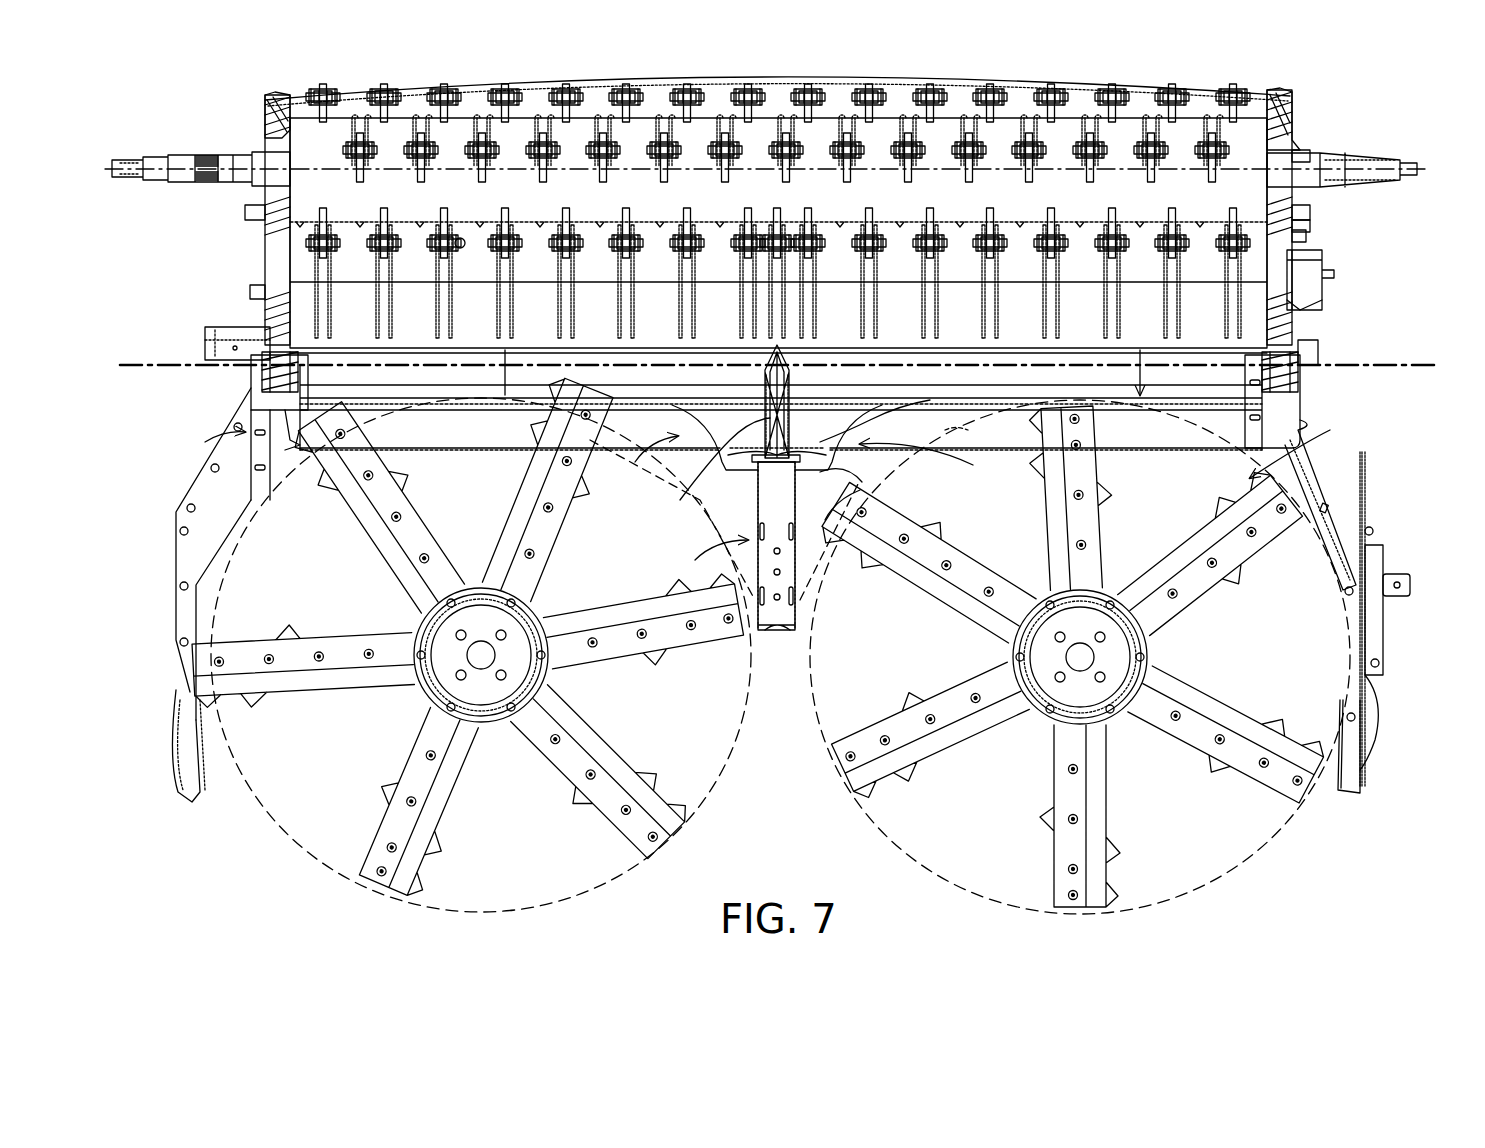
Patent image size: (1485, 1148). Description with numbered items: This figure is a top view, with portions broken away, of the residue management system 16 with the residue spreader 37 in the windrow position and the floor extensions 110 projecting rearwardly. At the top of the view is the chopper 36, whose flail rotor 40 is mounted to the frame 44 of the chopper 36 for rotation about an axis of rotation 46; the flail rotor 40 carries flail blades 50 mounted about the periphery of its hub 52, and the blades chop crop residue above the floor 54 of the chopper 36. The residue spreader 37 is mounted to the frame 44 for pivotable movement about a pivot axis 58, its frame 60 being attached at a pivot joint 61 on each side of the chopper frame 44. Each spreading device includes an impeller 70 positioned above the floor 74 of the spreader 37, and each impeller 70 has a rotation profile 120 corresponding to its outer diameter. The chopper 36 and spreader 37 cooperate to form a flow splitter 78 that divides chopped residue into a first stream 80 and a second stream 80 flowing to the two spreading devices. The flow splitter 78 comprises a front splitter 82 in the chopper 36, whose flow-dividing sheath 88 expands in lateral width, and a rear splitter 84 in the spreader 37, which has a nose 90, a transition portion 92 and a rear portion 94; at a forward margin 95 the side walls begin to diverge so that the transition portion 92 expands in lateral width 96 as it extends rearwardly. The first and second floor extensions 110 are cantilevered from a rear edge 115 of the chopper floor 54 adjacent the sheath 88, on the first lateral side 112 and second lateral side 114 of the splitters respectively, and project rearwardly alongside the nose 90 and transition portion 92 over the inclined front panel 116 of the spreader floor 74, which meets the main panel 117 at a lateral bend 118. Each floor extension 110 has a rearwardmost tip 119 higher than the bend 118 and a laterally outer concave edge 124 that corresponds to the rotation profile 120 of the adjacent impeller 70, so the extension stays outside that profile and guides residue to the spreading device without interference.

The residue management system 16 is at (1400, 118).
The chopper 36 is at (1352, 268).
The residue spreader 37 is at (755, 340).
The flail rotor 40 is at (208, 118).
The frame 44 is at (1285, 108).
The axis of rotation 46 is at (200, 182).
The flail blades 50 is at (1060, 340).
The hub 52 is at (1022, 205).
The floor 54 is at (405, 395).
The pivot axis 58 is at (165, 360).
The frame 60 is at (1382, 652).
The pivot joint 61 is at (268, 372).
The impeller 70 is at (505, 585).
The floor 74 is at (1300, 430).
The flow splitter 78 is at (758, 393).
The stream 80 is at (512, 392).
The front splitter 82 is at (758, 380).
The rear splitter 84 is at (745, 548).
The flow-dividing sheath 88 is at (788, 385).
The nose 90 is at (800, 378).
The transition portion 92 is at (790, 430).
The rear portion 94 is at (800, 572).
The forward margin 95 is at (800, 402).
The lateral width 96 is at (780, 482).
The floor extension 110 is at (655, 455).
The first lateral side 112 is at (862, 482).
The second lateral side 114 is at (740, 415).
The rear edge 115 is at (412, 415).
The front panel 116 is at (968, 430).
The main panel 117 is at (952, 548).
The lateral bend 118 is at (980, 470).
The rearwardmost tip 119 is at (740, 505).
The rotation profile 120 is at (300, 885).
The laterally outer concave edge 124 is at (672, 455).